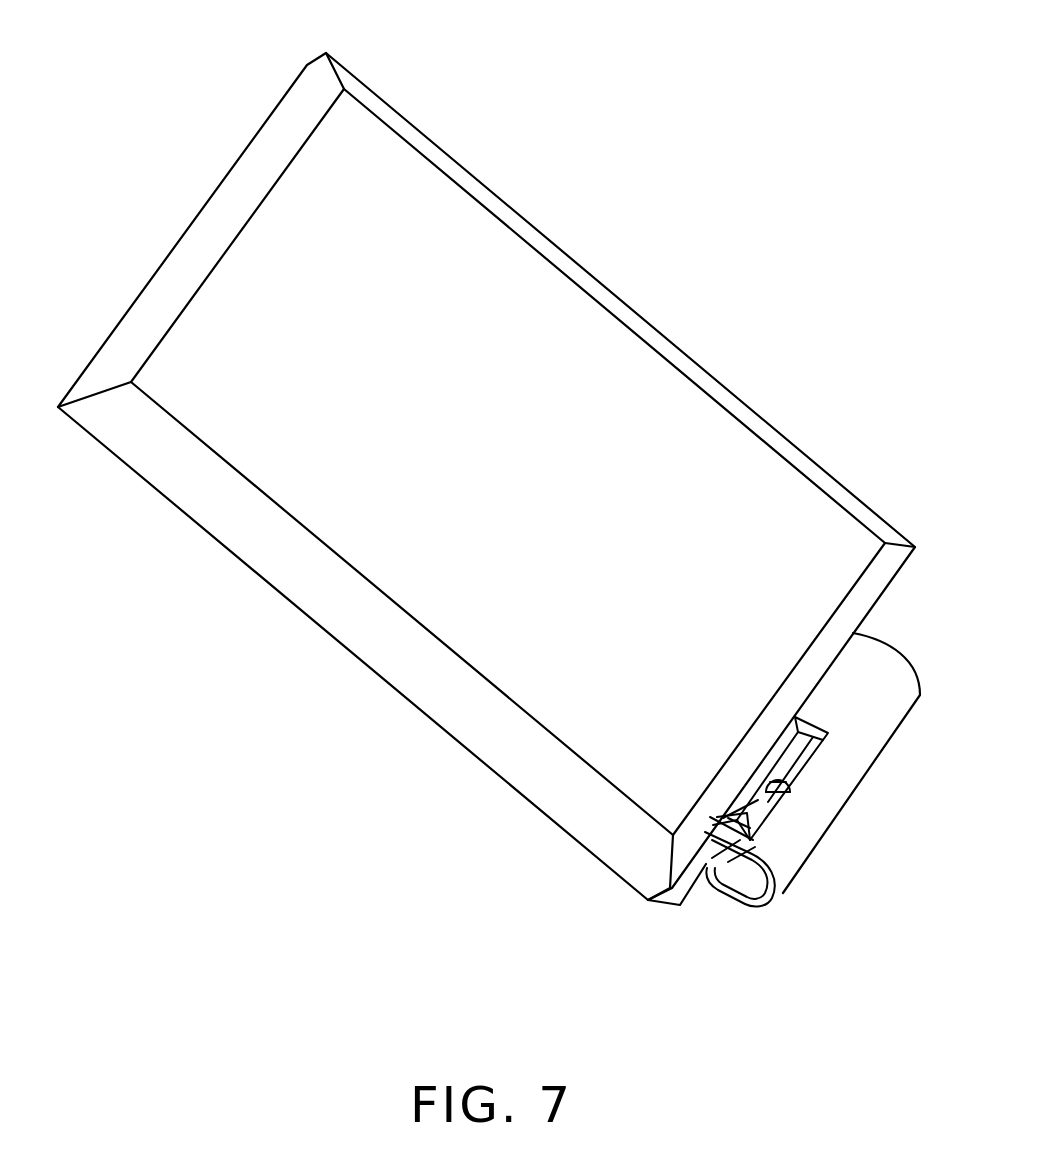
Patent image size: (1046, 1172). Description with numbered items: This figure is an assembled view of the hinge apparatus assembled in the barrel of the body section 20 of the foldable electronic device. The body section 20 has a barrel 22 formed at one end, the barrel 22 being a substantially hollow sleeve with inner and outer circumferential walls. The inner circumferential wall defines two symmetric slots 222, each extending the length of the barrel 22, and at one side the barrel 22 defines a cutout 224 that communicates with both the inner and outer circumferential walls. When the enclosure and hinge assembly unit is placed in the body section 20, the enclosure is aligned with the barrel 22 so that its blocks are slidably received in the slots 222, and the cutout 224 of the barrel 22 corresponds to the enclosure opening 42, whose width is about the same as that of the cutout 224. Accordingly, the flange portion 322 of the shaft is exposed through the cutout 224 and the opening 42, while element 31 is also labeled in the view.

The body section 20 is at (547, 293).
The barrel 22 is at (863, 717).
The receiving slot 31 is at (795, 760).
The flange portion 322 is at (773, 792).
The opening 42 is at (748, 813).
The slots 222 is at (748, 900).
The cutout 224 is at (765, 845).